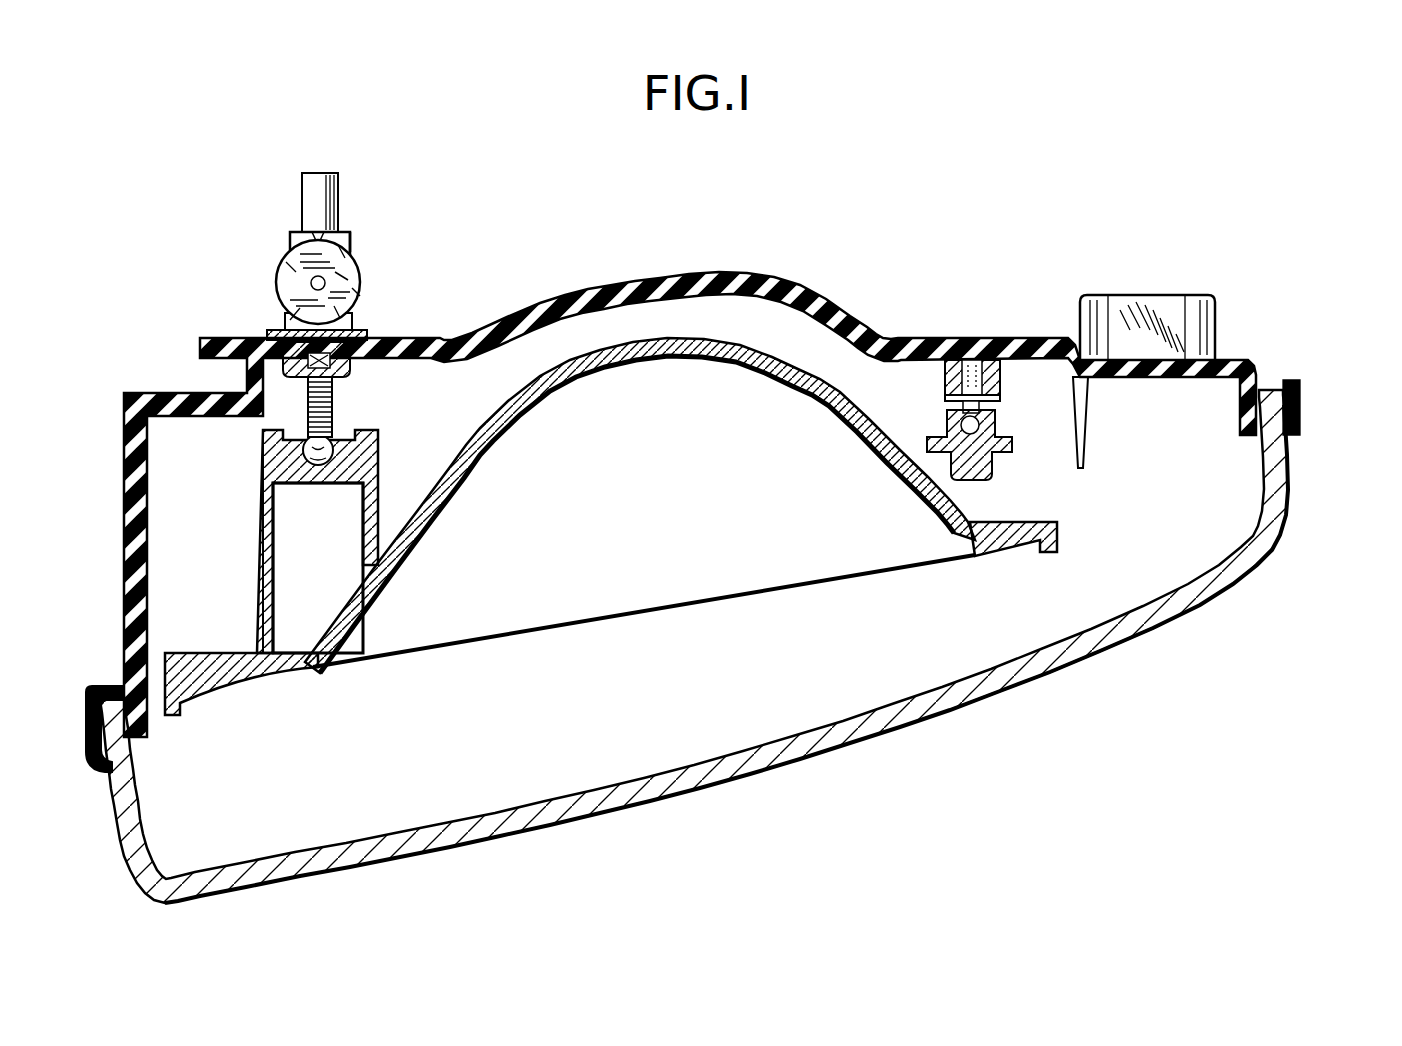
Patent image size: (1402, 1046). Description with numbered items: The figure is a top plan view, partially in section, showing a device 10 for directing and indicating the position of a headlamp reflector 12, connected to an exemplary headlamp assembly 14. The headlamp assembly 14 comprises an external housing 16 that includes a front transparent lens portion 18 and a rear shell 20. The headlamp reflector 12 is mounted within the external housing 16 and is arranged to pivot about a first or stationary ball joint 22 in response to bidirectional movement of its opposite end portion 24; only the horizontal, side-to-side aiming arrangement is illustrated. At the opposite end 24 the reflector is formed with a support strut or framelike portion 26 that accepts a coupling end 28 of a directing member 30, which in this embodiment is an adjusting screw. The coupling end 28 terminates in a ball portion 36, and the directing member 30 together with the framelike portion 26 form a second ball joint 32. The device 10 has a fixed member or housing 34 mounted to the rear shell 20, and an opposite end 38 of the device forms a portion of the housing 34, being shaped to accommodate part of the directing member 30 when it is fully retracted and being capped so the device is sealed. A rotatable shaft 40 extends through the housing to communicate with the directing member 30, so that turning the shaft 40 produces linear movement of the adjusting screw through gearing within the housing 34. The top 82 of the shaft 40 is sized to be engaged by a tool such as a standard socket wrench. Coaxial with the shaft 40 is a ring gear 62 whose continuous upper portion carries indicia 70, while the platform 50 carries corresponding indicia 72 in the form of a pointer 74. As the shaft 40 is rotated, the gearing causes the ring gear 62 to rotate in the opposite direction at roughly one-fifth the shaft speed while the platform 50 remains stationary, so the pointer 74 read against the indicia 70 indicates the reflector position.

The device 10 is at (738, 500).
The headlamp reflector 12 is at (727, 372).
The headlamp assembly 14 is at (745, 646).
The external housing 16 is at (1298, 468).
The front transparent lens portion 18 is at (1031, 684).
The rear shell 20 is at (796, 286).
The first or stationary ball joint 22 is at (1012, 424).
The opposite end portion 24 is at (312, 528).
The support strut or framelike portion 26 is at (382, 456).
The coupling end 28 is at (336, 470).
The directing member 30 is at (336, 406).
The second ball joint 32 is at (298, 430).
The fixed member or housing 34 is at (354, 230).
The ball portion 36 is at (262, 549).
The opposite end 38 is at (318, 170).
The rotatable shaft 40 is at (306, 290).
The platform 50 is at (351, 248).
The ring gear 62 is at (348, 274).
The indicia 70 is at (353, 292).
The indicia 72 is at (318, 226).
The pointer 74 is at (288, 252).
The top 82 is at (312, 283).